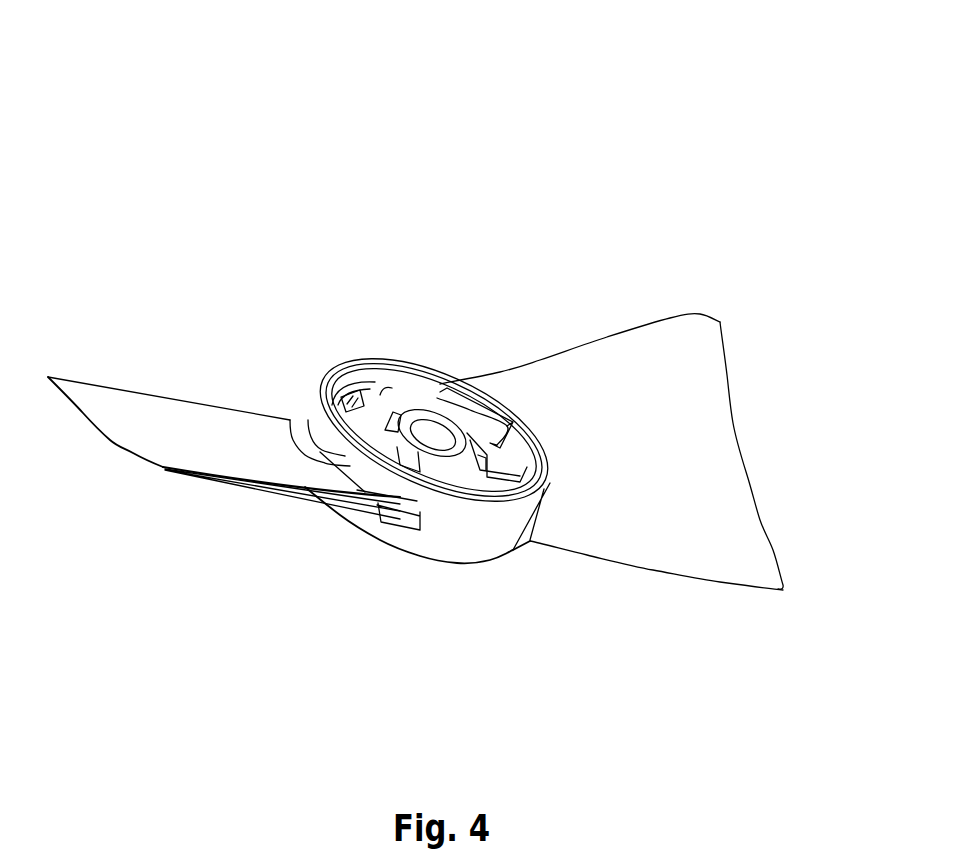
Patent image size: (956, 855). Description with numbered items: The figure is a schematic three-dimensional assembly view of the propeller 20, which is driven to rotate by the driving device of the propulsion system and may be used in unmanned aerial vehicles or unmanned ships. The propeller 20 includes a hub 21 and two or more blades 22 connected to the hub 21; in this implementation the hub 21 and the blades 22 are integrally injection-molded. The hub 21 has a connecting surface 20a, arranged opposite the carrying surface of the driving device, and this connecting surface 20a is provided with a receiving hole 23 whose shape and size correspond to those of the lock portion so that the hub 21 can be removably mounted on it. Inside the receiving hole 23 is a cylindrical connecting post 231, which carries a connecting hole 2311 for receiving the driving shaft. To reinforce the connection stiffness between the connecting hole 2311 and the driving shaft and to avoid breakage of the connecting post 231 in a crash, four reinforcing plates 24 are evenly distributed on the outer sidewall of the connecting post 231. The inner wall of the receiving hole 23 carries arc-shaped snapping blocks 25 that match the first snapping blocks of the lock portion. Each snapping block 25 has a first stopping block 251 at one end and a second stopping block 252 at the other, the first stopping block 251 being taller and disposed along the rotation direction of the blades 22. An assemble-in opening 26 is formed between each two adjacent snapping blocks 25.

The propeller 20 is at (454, 41).
The connecting surface 20a is at (331, 380).
The hub 21 is at (470, 538).
The blades 22 is at (678, 438).
The receiving hole 23 is at (353, 453).
The connecting post 231 is at (427, 400).
The connecting hole 2311 is at (423, 470).
The reinforcing plates 24 is at (374, 440).
The snapping blocks 25 is at (483, 391).
The first stopping block 251 is at (550, 480).
The second stopping block 252 is at (404, 470).
The assemble-in opening 26 is at (389, 394).